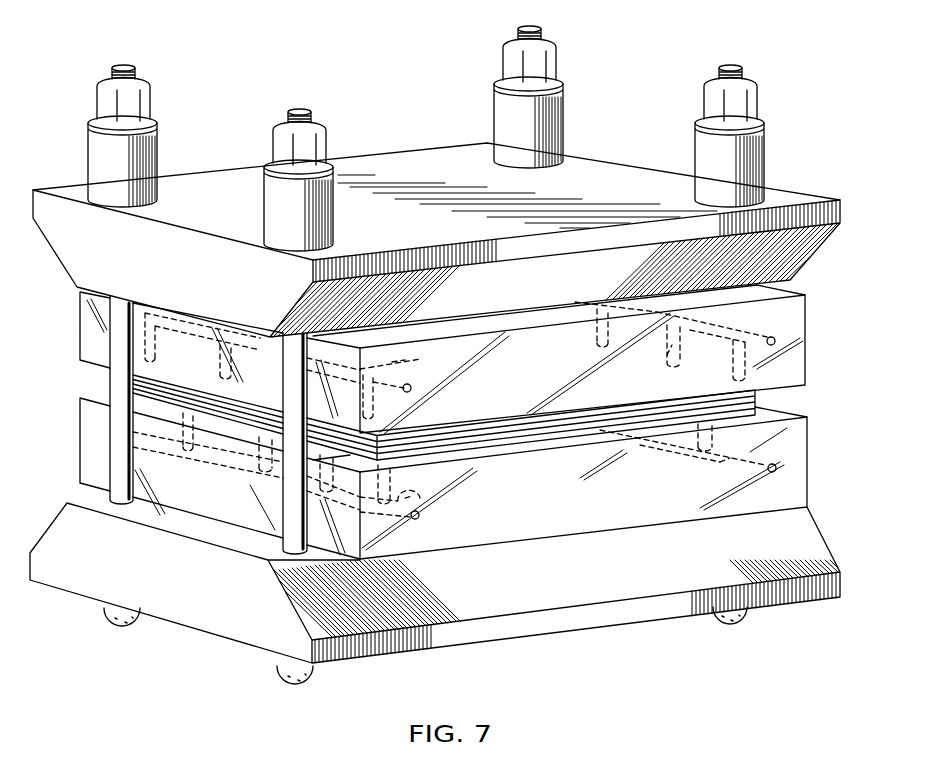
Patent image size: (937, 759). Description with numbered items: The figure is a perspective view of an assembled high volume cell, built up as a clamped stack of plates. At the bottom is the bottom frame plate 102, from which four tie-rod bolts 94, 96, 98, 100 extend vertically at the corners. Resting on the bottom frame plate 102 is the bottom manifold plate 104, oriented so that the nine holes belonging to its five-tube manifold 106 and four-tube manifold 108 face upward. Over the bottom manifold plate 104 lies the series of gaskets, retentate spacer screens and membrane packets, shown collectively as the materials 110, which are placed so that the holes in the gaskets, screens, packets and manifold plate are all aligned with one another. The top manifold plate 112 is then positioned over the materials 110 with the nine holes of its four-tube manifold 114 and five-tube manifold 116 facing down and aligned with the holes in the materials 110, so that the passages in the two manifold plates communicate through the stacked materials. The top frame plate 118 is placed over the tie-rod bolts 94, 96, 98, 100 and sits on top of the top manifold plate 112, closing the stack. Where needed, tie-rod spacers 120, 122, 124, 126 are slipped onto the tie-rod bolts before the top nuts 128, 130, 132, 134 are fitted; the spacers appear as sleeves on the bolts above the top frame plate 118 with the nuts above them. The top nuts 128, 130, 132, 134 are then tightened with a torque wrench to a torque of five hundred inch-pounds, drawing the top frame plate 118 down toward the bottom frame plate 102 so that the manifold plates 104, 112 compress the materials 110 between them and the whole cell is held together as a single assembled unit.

The tie-rod bolt 94 is at (128, 63).
The tie-rod bolt 96 is at (307, 110).
The tie-rod bolt 98 is at (542, 23).
The tie-rod bolt 100 is at (743, 62).
The bottom frame plate 102 is at (810, 556).
The bottom manifold plate 104 is at (797, 450).
The five-tube manifold 106 is at (433, 500).
The four-tube manifold 108 is at (720, 463).
The series of gaskets, retentate spacer screens, and membrane packets 110 is at (755, 398).
The top manifold plate 112 is at (797, 314).
The four-tube manifold 114 is at (405, 360).
The five-tube manifold 116 is at (667, 360).
The top frame plate 118 is at (840, 213).
The tie-rod spacer 120 is at (88, 147).
The tie-rod spacer 122 is at (266, 198).
The tie-rod spacer 124 is at (494, 111).
The tie-rod spacer 126 is at (695, 140).
The top nut 128 is at (150, 97).
The top nut 130 is at (326, 134).
The top nut 132 is at (557, 58).
The top nut 134 is at (758, 97).